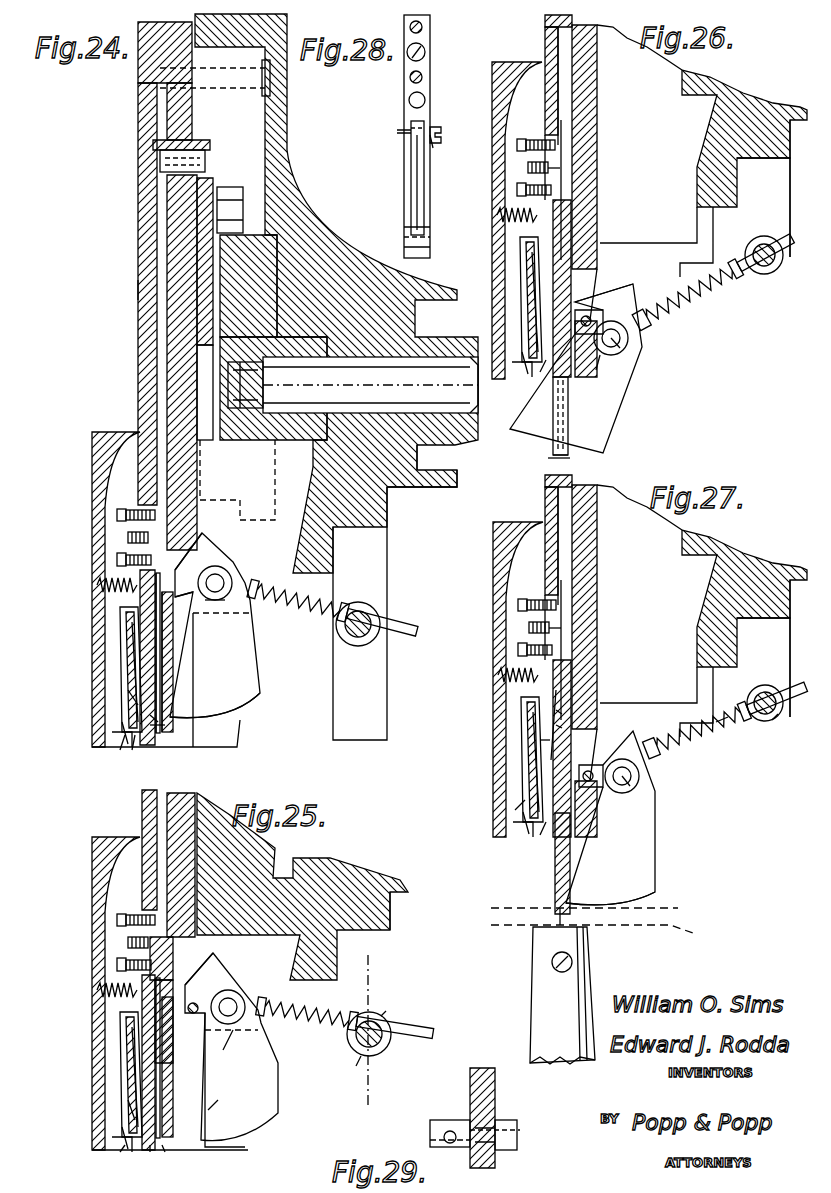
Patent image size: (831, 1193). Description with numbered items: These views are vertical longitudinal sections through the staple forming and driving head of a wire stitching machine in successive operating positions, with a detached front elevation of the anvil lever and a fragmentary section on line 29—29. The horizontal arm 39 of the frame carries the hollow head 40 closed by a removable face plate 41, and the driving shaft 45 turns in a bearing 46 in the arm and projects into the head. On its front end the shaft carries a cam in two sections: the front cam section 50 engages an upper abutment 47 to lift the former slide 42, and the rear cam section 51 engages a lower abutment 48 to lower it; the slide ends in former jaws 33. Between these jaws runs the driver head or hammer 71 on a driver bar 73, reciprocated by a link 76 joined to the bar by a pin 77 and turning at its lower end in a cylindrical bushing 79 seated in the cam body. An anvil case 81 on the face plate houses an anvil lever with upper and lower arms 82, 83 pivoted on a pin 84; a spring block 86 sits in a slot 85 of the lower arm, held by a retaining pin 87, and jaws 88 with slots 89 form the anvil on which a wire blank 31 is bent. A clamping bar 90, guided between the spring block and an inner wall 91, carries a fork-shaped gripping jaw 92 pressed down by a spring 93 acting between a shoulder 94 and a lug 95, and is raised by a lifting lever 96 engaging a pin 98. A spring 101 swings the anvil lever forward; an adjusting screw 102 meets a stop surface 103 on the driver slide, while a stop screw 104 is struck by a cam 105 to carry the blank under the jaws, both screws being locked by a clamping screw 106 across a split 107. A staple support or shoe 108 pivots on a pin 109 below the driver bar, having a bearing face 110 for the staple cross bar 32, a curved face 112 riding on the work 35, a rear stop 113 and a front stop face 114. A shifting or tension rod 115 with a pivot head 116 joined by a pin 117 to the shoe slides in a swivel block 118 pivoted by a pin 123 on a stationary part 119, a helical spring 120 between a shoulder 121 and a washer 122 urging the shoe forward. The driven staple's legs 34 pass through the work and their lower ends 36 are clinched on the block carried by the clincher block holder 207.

In FIG. 25, the section line 29 is at (365, 1029).
In FIG. 24, the wire blank 31 is at (123, 752).
In FIG. 25, the wire blank 31 is at (152, 1155).
In FIG. 27, the upper cross bar 32 is at (560, 912).
In FIG. 24, the former jaws 33 is at (160, 722).
In FIG. 26, the former jaws 33 is at (553, 455).
In FIG. 27, the legs 34 is at (568, 920).
In FIG. 27, the work 35 is at (693, 934).
In FIG. 27, the lower ends of legs 36 is at (560, 928).
In FIG. 24, the horizontal arm 39 is at (428, 488).
In FIG. 26, the horizontal arm 39 is at (796, 106).
In FIG. 27, the horizontal arm 39 is at (796, 566).
In FIG. 25, the horizontal arm 39 is at (398, 888).
In FIG. 24, the hollow head 40 is at (289, 145).
In FIG. 26, the hollow head 40 is at (682, 90).
In FIG. 27, the hollow head 40 is at (682, 550).
In FIG. 25, the hollow head 40 is at (280, 872).
In FIG. 24, the face plate 41 is at (140, 125).
In FIG. 26, the face plate 41 is at (548, 26).
In FIG. 27, the face plate 41 is at (548, 498).
In FIG. 25, the face plate 41 is at (145, 826).
In FIG. 24, the former slide 42 is at (180, 230).
In FIG. 26, the former slide 42 is at (590, 75).
In FIG. 27, the former slide 42 is at (590, 530).
In FIG. 25, the former slide 42 is at (186, 846).
In FIG. 24, the driving shaft 45 is at (370, 385).
In FIG. 24, the bearing 46 is at (427, 458).
In FIG. 24, the upper abutment 47 is at (236, 200).
In FIG. 24, the lower abutment 48 is at (255, 503).
In FIG. 24, the front cam section 50 is at (240, 250).
In FIG. 24, the rear cam section 51 is at (265, 240).
In FIG. 24, the driver head 71 is at (165, 740).
In FIG. 26, the driver head 71 is at (568, 400).
In FIG. 27, the driver head 71 is at (555, 900).
In FIG. 25, the driver head 71 is at (168, 1068).
In FIG. 24, the driver bar 73 is at (150, 290).
In FIG. 26, the driver bar 73 is at (585, 45).
In FIG. 27, the driver bar 73 is at (585, 505).
In FIG. 25, the driver bar 73 is at (172, 946).
In FIG. 24, the link 76 is at (203, 185).
In FIG. 24, the pin 77 is at (200, 152).
In FIG. 24, the cylindrical bushing 79 is at (228, 395).
In FIG. 24, the anvil case 81 is at (95, 436).
In FIG. 26, the anvil case 81 is at (496, 62).
In FIG. 27, the anvil case 81 is at (497, 548).
In FIG. 25, the anvil case 81 is at (94, 842).
In FIG. 28, the upper arm 82 is at (404, 88).
In FIG. 26, the upper arm 82 is at (563, 146).
In FIG. 27, the upper arm 82 is at (563, 606).
In FIG. 25, the upper arm 82 is at (125, 912).
In FIG. 28, the lower arm 83 is at (411, 180).
In FIG. 24, the pivot pin 84 is at (125, 622).
In FIG. 28, the pivot pin 84 is at (434, 147).
In FIG. 26, the pivot pin 84 is at (522, 255).
In FIG. 27, the pivot pin 84 is at (523, 706).
In FIG. 25, the pivot pin 84 is at (120, 1022).
In FIG. 28, the vertical slot 85 is at (411, 156).
In FIG. 27, the vertical slot 85 is at (560, 705).
In FIG. 24, the spring block 86 is at (127, 662).
In FIG. 28, the spring block 86 is at (417, 200).
In FIG. 27, the spring block 86 is at (528, 752).
In FIG. 27, the retaining pin 87 is at (516, 806).
In FIG. 24, the jaws 88 is at (136, 752).
In FIG. 25, the jaws 88 is at (165, 1152).
In FIG. 26, the slot 89 is at (541, 378).
In FIG. 27, the slot 89 is at (541, 840).
In FIG. 24, the clamping bar 90 is at (160, 683).
In FIG. 27, the clamping bar 90 is at (535, 732).
In FIG. 24, the inner wall 91 is at (160, 648).
In FIG. 26, the inner wall 91 is at (600, 272).
In FIG. 27, the inner wall 91 is at (600, 745).
In FIG. 25, the gripping jaw 92 is at (145, 1152).
In FIG. 24, the spring 93 is at (125, 688).
In FIG. 25, the shoulder 94 is at (122, 1042).
In FIG. 25, the lug 95 is at (122, 1110).
In FIG. 27, the lifting lever 96 is at (562, 726).
In FIG. 27, the pin 98 is at (560, 712).
In FIG. 24, the spring 101 is at (97, 585).
In FIG. 27, the spring 101 is at (500, 675).
In FIG. 28, the adjusting screw 102 is at (423, 27).
In FIG. 26, the adjusting screw 102 is at (556, 150).
In FIG. 27, the adjusting screw 102 is at (557, 610).
In FIG. 26, the stop surface 103 is at (562, 168).
In FIG. 27, the stop surface 103 is at (563, 628).
In FIG. 24, the stop screw 104 is at (117, 560).
In FIG. 28, the stop screw 104 is at (423, 77).
In FIG. 26, the stop screw 104 is at (552, 190).
In FIG. 25, the stop screw 104 is at (115, 967).
In FIG. 24, the cam 105 is at (196, 562).
In FIG. 25, the cam 105 is at (170, 942).
In FIG. 28, the clamping screw 106 is at (426, 52).
In FIG. 26, the clamping screw 106 is at (520, 170).
In FIG. 27, the clamping screw 106 is at (520, 650).
In FIG. 26, the split 107 is at (545, 142).
In FIG. 27, the split 107 is at (548, 600).
In FIG. 24, the staple support shoe 108 is at (253, 670).
In FIG. 26, the staple support shoe 108 is at (600, 440).
In FIG. 27, the staple support shoe 108 is at (655, 862).
In FIG. 25, the staple support shoe 108 is at (266, 1096).
In FIG. 26, the pin 109 is at (592, 316).
In FIG. 27, the pin 109 is at (588, 776).
In FIG. 25, the pin 109 is at (198, 1003).
In FIG. 26, the bearing face 110 is at (562, 420).
In FIG. 25, the bearing face 110 is at (206, 1108).
In FIG. 24, the curved face 112 is at (210, 710).
In FIG. 27, the curved face 112 is at (590, 903).
In FIG. 24, the stop 113 is at (190, 546).
In FIG. 26, the stop 113 is at (625, 305).
In FIG. 26, the front stop face 114 is at (602, 356).
In FIG. 25, the front stop face 114 is at (222, 1040).
In FIG. 24, the stud 115 is at (378, 643).
In FIG. 26, the stud 115 is at (780, 246).
In FIG. 27, the stud 115 is at (785, 695).
In FIG. 25, the stud 115 is at (398, 1035).
In FIG. 29, the stud 115 is at (448, 1130).
In FIG. 26, the pivot head 116 is at (630, 340).
In FIG. 27, the pivot head 116 is at (640, 780).
In FIG. 24, the pin 117 is at (224, 582).
In FIG. 26, the pin 117 is at (626, 350).
In FIG. 27, the pin 117 is at (637, 790).
In FIG. 25, the pin 117 is at (238, 1000).
In FIG. 27, the swivel block 118 is at (781, 717).
In FIG. 25, the swivel block 118 is at (386, 1010).
In FIG. 24, the stationary part 119 is at (380, 556).
In FIG. 26, the stationary part 119 is at (763, 207).
In FIG. 27, the stationary part 119 is at (763, 667).
In FIG. 29, the stationary part 119 is at (495, 1099).
In FIG. 24, the helical spring 120 is at (340, 640).
In FIG. 27, the helical spring 120 is at (735, 730).
In FIG. 25, the helical spring 120 is at (342, 1040).
In FIG. 26, the shoulder 121 is at (658, 325).
In FIG. 27, the shoulder 121 is at (670, 752).
In FIG. 24, the washer 122 is at (340, 612).
In FIG. 26, the washer 122 is at (740, 275).
In FIG. 27, the washer 122 is at (697, 729).
In FIG. 25, the washer 122 is at (366, 1010).
In FIG. 25, the pin 123 is at (356, 1063).
In FIG. 29, the pin 123 is at (510, 1156).
In FIG. 27, the clincher block holder 207 is at (545, 994).